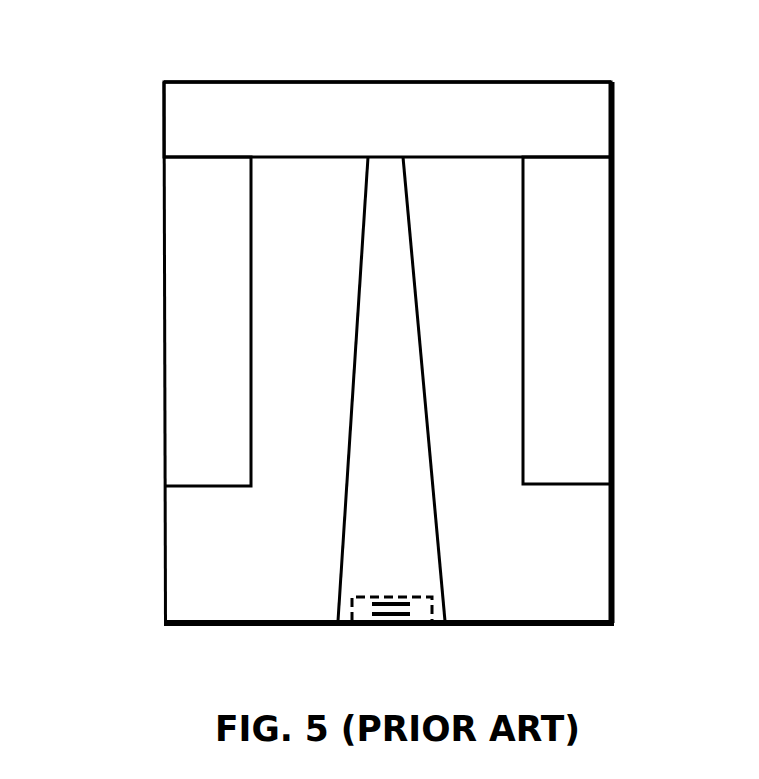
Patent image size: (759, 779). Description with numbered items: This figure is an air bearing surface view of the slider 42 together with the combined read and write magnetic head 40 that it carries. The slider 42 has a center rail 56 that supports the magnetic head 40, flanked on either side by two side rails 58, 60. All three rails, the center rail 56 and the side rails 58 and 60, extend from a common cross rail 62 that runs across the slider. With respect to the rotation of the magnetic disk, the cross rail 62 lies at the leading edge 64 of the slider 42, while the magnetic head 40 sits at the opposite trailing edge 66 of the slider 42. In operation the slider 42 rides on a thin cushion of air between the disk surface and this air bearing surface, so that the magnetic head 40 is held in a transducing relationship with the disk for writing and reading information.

The magnetic head 40 is at (360, 632).
The slider 42 is at (148, 571).
The center rail 56 is at (374, 268).
The side rail 58 is at (176, 231).
The side rail 60 is at (583, 228).
The cross rail 62 is at (297, 88).
The leading edge 64 is at (453, 80).
The trailing edge 66 is at (508, 627).